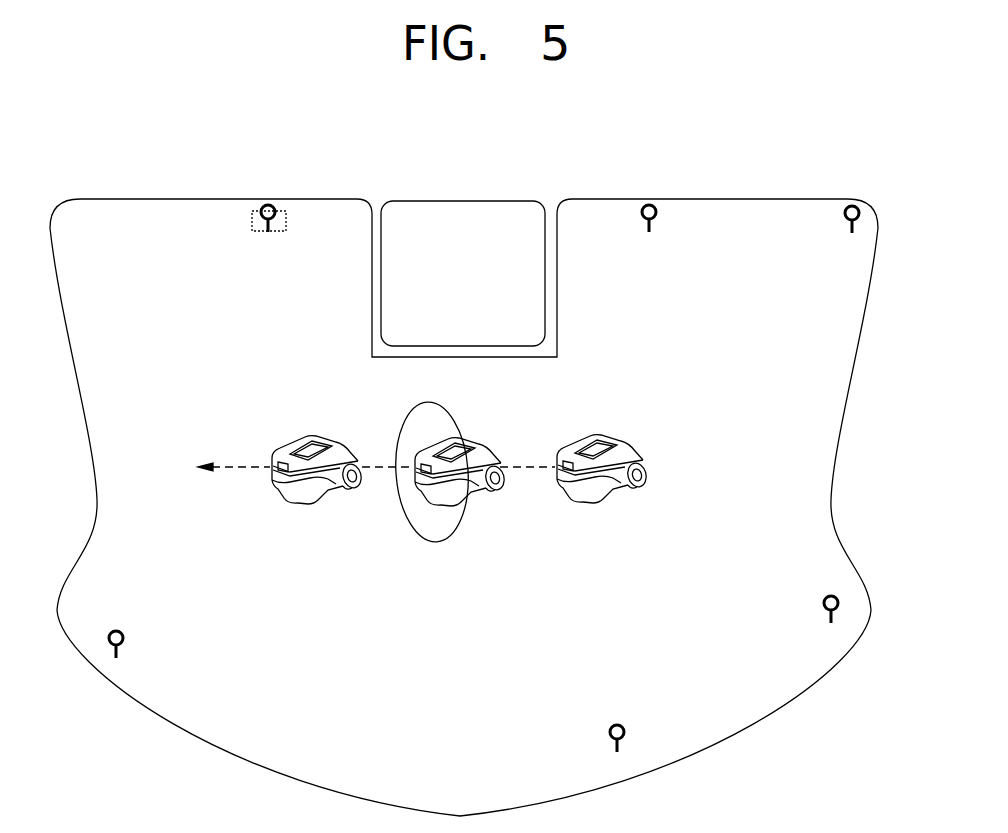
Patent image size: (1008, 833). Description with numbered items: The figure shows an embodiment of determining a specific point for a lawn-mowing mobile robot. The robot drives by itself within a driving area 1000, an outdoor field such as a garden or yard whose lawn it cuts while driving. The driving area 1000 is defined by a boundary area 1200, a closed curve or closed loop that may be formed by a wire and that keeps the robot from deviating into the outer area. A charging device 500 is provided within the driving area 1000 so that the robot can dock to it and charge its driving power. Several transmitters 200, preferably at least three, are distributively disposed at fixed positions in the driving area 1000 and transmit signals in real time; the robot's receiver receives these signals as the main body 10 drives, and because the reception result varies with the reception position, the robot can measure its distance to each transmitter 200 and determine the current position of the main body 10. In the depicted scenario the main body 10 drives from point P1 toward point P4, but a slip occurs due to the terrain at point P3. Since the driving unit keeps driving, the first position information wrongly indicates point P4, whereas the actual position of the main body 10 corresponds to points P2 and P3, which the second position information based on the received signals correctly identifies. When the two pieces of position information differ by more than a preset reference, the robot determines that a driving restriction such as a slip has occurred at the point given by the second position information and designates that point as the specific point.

The main body 10 is at (641, 432).
The transmitter 200 is at (649, 202).
The charging device 500 is at (259, 233).
The driving area 1000 is at (464, 479).
The boundary area 1200 is at (738, 198).
The point P1 is at (625, 442).
The point P2 is at (436, 481).
The point P3 is at (461, 455).
The point P4 is at (318, 452).